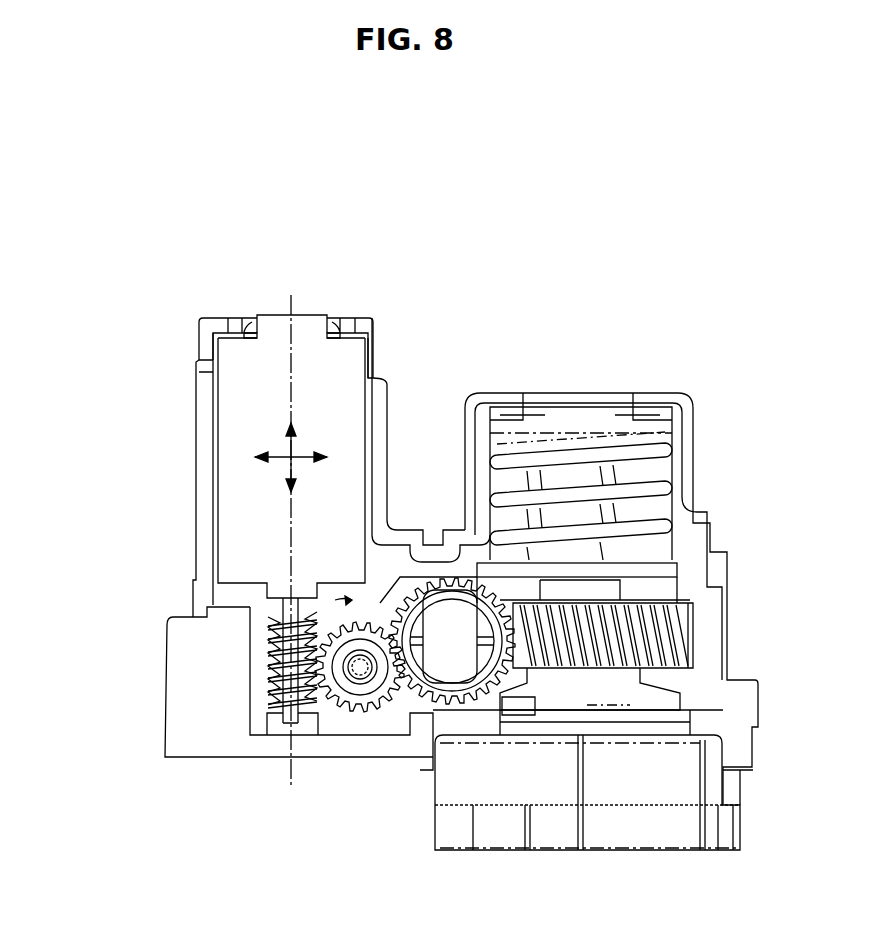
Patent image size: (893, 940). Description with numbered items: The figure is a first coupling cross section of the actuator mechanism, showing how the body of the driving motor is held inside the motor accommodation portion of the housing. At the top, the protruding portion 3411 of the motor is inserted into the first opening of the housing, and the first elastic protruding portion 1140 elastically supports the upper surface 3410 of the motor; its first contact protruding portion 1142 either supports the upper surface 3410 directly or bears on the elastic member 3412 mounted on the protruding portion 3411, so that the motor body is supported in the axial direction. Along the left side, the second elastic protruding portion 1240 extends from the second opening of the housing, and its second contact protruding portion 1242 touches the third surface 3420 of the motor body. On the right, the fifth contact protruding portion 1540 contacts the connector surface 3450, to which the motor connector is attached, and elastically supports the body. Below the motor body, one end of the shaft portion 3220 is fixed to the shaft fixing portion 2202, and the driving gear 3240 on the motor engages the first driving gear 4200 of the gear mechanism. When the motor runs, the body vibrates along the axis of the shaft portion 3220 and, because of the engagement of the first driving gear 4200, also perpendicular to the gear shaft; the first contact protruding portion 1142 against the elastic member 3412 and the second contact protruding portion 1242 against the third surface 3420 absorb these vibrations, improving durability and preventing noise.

The first elastic protruding portion 1140 is at (243, 335).
The first contact protruding portion 1142 is at (243, 333).
The second contact protruding portion 1242 is at (205, 370).
The second elastic protruding portion 1240 is at (190, 382).
The third surface 3420 is at (215, 420).
The protruding portion 3411 is at (272, 318).
The elastic member 3412 is at (338, 335).
The upper surface 3410 is at (355, 328).
The connector surface 3450 is at (372, 348).
The fifth contact protruding portion 1540 is at (385, 382).
The driving gear 3240 is at (270, 673).
The shaft portion 3220 is at (285, 723).
The shaft fixing portion 2202 is at (308, 723).
The first driving gear 4200 is at (393, 717).